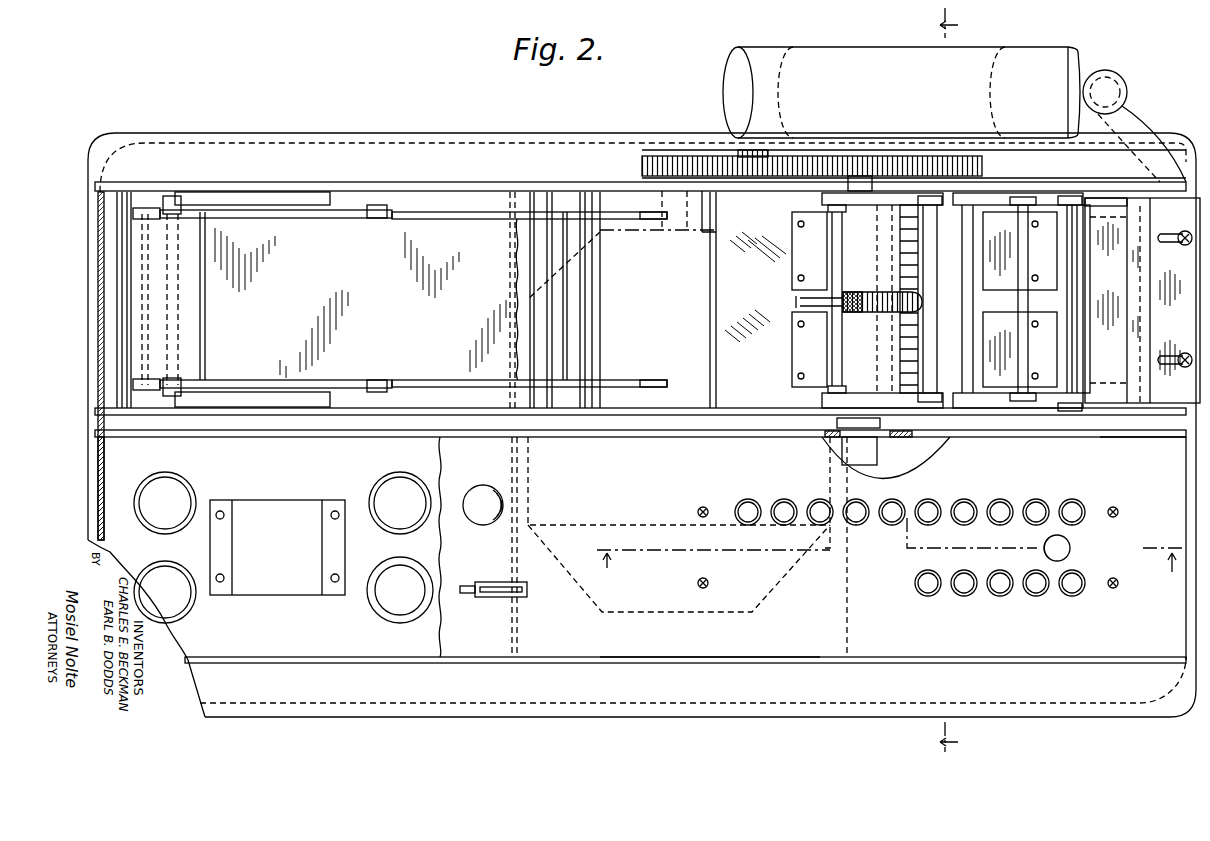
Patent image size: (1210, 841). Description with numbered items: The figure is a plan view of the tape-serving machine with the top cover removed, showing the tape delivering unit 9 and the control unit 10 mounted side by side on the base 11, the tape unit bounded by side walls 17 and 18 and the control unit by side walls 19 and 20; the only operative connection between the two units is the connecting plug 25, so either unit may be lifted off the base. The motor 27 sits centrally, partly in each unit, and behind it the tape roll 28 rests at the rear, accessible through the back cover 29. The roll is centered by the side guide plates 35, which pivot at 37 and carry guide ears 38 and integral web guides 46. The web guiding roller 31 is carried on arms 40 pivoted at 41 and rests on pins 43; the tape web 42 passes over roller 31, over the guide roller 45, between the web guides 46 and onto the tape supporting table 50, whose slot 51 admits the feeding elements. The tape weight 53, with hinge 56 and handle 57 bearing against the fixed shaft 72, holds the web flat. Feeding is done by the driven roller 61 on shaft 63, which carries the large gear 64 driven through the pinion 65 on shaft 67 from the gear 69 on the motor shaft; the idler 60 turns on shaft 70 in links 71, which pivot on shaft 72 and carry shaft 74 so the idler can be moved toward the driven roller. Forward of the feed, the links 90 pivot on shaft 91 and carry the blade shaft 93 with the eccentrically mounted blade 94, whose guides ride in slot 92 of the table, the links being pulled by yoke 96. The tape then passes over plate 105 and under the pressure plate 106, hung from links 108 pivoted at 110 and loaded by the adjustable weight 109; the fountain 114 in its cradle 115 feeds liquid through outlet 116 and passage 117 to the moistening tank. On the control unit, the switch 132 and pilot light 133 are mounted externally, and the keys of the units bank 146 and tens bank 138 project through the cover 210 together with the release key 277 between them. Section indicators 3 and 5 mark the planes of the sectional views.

The section line 3- 3 is at (960, 380).
The section line 5- 5 is at (889, 556).
The tape delivering unit 9 is at (547, 129).
The control unit 10 is at (411, 720).
The base 11 is at (433, 142).
The side wall 17 is at (540, 191).
The side wall 18 is at (675, 408).
The side wall 19 is at (637, 437).
The side wall 20 is at (670, 657).
The connecting plug 25 is at (820, 429).
The motor 27 is at (572, 580).
The tape roll 28 is at (146, 386).
The cover 29 is at (98, 338).
The web guiding roller 31 is at (142, 214).
The side guide plates 35 is at (440, 212).
The pivot 37 is at (542, 408).
The guide ears 38 is at (133, 214).
The arms 40 is at (285, 207).
The pivot 41 is at (368, 198).
The web 42 is at (487, 232).
The pins 43 is at (218, 197).
The guide roller 45 is at (600, 262).
The web guides 46 is at (648, 220).
The tape supporting table 50 is at (722, 297).
The slot 51 is at (980, 290).
The tape weight 53 is at (990, 208).
The hinge 56 is at (919, 332).
The handle 57 is at (800, 302).
The idler 60 is at (863, 292).
The feed roller 61 is at (850, 312).
The shaft 63 is at (860, 178).
The large gear 64 is at (932, 158).
The pinion 65 is at (750, 152).
The shaft 67 is at (725, 192).
The gear 69 is at (680, 160).
The shaft 70 is at (886, 235).
The links 71 is at (858, 235).
The fixed shaft 72 is at (833, 250).
The shaft 74 is at (900, 247).
The links 90 is at (1040, 205).
The shaft 91 is at (965, 335).
The slot 92 is at (1066, 300).
The blade shaft 93 is at (1085, 275).
The blade 94 is at (1077, 262).
The yoke 96 is at (1020, 204).
The plate 105 is at (1090, 226).
The pressure plate 106 is at (1087, 203).
The links 108 is at (1068, 197).
The adjustable weight 109 is at (1108, 210).
The pivot 110 is at (1066, 411).
The fountain 114 is at (1040, 57).
The cradle 115 is at (995, 48).
The outlet 116 is at (1112, 88).
The passage 117 is at (1130, 120).
The switch 132 is at (485, 582).
The pilot light 133 is at (486, 486).
The tens bank 138 is at (925, 595).
The units bank 146 is at (755, 494).
The cover 210 is at (1138, 443).
The release key 277 is at (1070, 548).